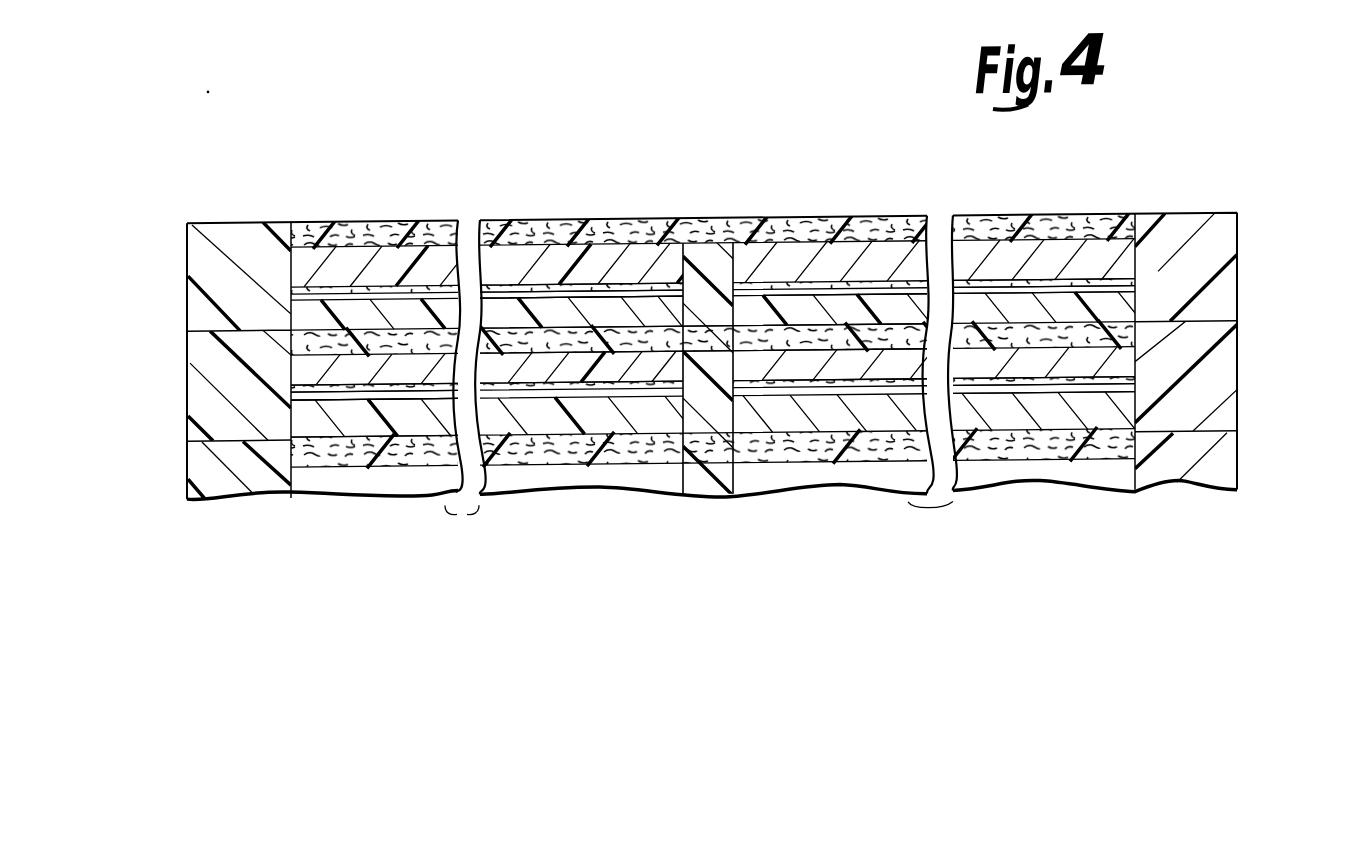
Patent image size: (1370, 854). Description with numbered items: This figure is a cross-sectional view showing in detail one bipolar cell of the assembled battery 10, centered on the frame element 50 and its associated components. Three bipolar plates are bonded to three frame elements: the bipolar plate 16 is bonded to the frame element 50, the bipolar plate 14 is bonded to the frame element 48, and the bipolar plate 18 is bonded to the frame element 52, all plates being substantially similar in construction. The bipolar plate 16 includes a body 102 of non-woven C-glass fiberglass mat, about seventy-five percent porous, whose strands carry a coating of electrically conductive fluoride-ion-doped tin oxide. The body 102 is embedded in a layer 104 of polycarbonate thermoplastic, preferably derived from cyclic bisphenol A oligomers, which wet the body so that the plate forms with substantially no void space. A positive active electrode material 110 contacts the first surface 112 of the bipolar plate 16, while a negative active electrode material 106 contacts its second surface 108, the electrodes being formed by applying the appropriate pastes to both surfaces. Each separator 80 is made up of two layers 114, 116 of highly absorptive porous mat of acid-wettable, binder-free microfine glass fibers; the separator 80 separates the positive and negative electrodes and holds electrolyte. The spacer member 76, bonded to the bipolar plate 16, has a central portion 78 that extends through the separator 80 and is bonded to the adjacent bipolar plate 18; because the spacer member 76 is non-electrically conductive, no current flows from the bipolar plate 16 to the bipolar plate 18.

The battery 10 is at (140, 205).
The bipolar plate 14 is at (337, 222).
The bipolar plate 16 is at (313, 333).
The bipolar plate 18 is at (327, 452).
The frame element 48 is at (212, 260).
The frame element 50 is at (205, 401).
The frame element 52 is at (203, 469).
The spacer member 76 is at (713, 432).
The central portion 78 is at (722, 366).
The separator 80 is at (1137, 301).
The body 102 is at (1093, 336).
The layer 104 is at (648, 340).
The negative active electrode material 106 is at (510, 312).
The second surface 108 is at (585, 333).
The positive active electrode material 110 is at (542, 375).
The first surface 112 is at (806, 330).
The layer 114 is at (323, 383).
The layer 116 is at (397, 404).